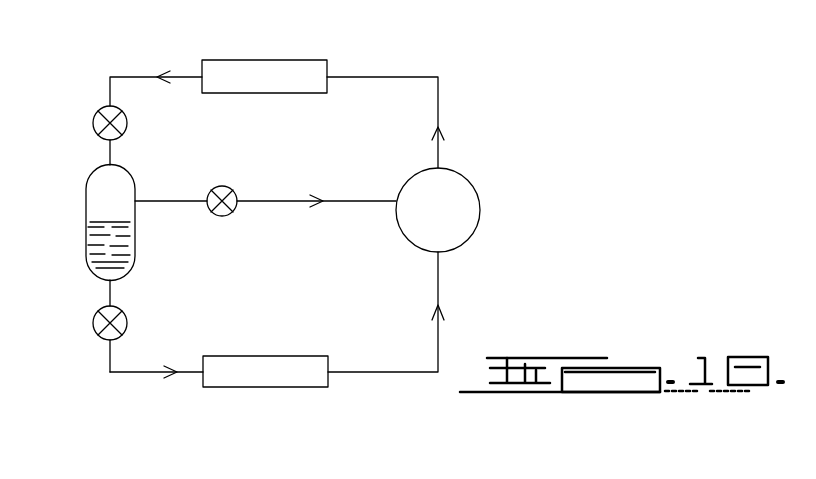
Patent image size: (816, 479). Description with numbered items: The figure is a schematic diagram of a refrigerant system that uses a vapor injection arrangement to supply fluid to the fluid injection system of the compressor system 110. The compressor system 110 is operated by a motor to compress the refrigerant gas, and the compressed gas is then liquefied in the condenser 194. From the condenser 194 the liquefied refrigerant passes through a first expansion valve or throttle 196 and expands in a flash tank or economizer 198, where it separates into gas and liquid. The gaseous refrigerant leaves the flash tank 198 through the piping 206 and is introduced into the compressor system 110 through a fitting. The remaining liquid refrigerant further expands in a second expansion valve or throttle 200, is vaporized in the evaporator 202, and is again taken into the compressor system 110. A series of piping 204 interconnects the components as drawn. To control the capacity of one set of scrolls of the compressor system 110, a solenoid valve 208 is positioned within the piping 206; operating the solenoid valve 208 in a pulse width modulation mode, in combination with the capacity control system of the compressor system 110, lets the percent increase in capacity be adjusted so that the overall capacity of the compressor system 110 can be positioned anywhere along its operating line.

The compressor system 110 is at (470, 211).
The condenser 194 is at (300, 62).
The first expansion valve 196 is at (127, 125).
The flash tank 198 is at (135, 262).
The second expansion valve 200 is at (102, 338).
The evaporator 202 is at (252, 381).
The piping 204 is at (146, 376).
The piping 206 is at (280, 201).
The solenoid valve 208 is at (229, 188).